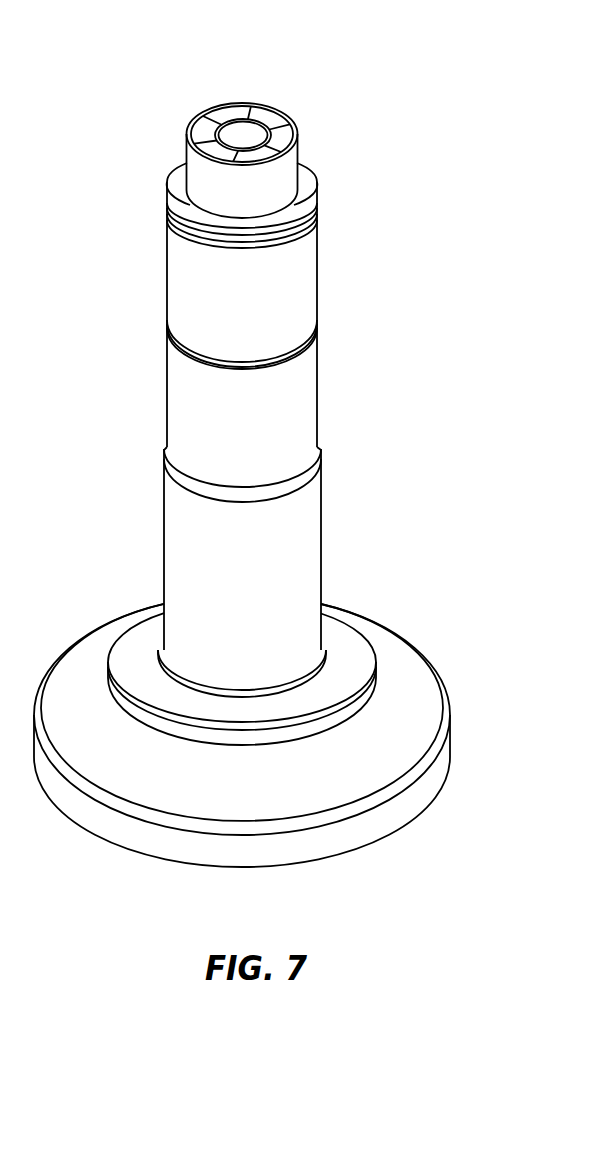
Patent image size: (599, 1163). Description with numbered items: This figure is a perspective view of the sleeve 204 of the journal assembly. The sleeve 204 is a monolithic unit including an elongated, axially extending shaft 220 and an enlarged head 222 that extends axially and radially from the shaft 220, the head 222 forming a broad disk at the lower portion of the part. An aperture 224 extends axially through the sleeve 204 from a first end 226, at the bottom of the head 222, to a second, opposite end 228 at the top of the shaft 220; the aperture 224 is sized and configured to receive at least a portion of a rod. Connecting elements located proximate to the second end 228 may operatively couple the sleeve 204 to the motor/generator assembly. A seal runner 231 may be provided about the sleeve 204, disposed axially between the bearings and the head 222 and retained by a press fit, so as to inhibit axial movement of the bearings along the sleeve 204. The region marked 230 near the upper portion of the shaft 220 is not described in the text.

The sleeve 204 is at (413, 159).
The shaft 220 is at (283, 408).
The head 222 is at (405, 692).
The aperture 224 is at (240, 121).
The first end 226 is at (279, 866).
The second end 228 is at (205, 127).
The upper groove section 230 is at (341, 208).
The seal runner 231 is at (340, 538).